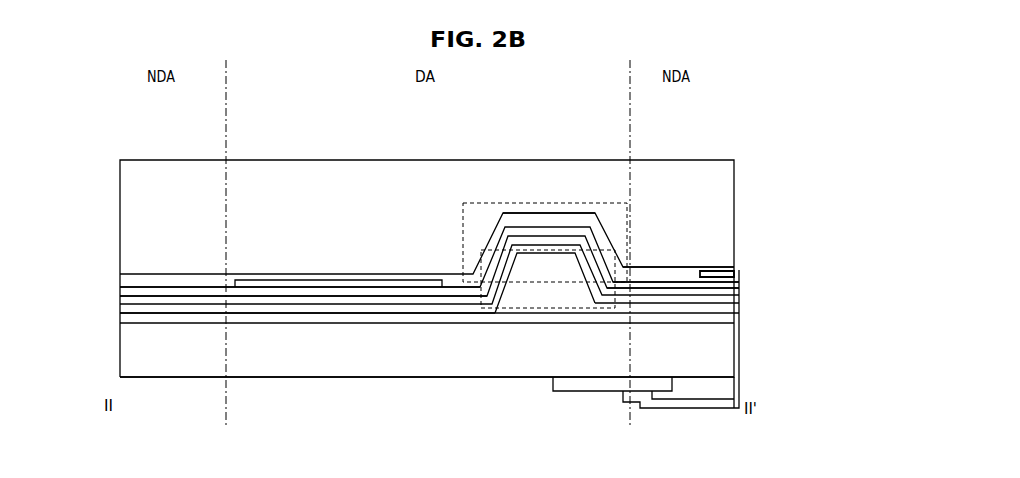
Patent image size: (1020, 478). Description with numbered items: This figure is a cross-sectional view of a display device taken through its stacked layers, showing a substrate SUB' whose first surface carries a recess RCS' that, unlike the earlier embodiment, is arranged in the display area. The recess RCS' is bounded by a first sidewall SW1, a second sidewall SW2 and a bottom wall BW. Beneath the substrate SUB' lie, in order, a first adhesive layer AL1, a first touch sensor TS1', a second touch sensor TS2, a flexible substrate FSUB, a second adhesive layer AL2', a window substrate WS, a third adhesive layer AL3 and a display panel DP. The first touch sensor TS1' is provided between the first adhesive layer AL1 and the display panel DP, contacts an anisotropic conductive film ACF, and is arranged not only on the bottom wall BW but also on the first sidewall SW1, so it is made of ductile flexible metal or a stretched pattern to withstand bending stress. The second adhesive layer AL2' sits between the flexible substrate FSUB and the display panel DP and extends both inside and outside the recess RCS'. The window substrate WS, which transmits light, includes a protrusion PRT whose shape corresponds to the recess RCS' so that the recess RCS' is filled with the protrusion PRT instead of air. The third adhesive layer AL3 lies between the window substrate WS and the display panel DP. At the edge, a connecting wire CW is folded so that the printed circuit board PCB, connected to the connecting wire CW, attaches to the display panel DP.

The substrate SUB' is at (399, 268).
The flexible substrate FSUB is at (130, 294).
The second touch sensor TS2 is at (323, 280).
The second sidewall SW2 is at (488, 252).
The bottom wall BW is at (527, 212).
The recess RCS' is at (545, 215).
The first sidewall SW1 is at (609, 240).
The first adhesive layer AL1 is at (670, 266).
The connecting wire CW is at (740, 273).
The anisotropic conductive film ACF is at (740, 283).
The first touch sensor TS1' is at (471, 279).
The second adhesive layer AL2' is at (471, 296).
The window substrate WS is at (740, 308).
The third adhesive layer AL3 is at (740, 321).
The display panel DP is at (740, 371).
The protrusion PRT is at (520, 314).
The printed circuit board PCB is at (572, 392).